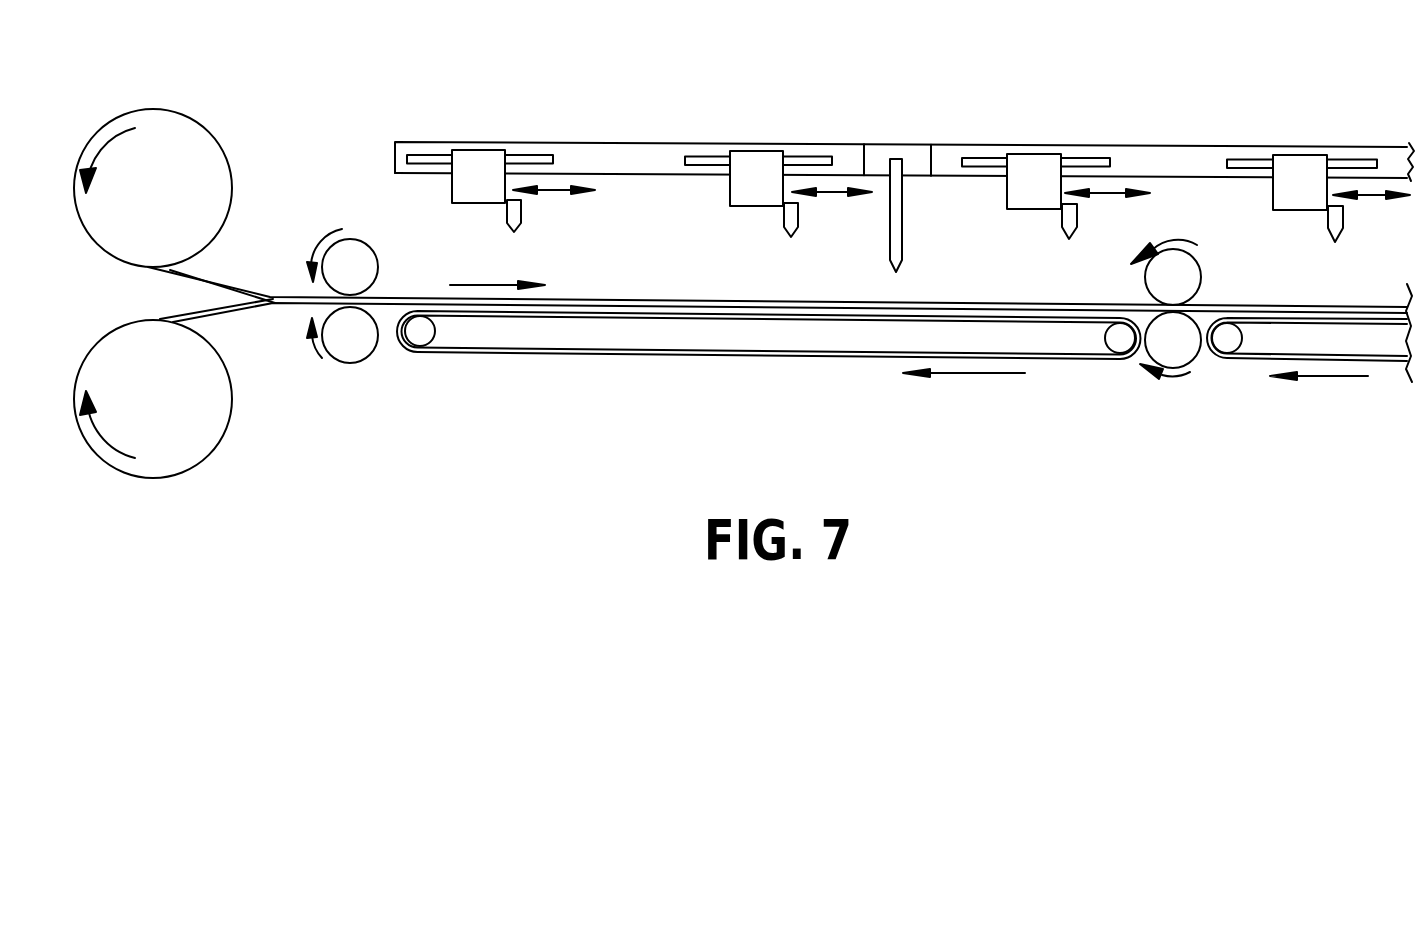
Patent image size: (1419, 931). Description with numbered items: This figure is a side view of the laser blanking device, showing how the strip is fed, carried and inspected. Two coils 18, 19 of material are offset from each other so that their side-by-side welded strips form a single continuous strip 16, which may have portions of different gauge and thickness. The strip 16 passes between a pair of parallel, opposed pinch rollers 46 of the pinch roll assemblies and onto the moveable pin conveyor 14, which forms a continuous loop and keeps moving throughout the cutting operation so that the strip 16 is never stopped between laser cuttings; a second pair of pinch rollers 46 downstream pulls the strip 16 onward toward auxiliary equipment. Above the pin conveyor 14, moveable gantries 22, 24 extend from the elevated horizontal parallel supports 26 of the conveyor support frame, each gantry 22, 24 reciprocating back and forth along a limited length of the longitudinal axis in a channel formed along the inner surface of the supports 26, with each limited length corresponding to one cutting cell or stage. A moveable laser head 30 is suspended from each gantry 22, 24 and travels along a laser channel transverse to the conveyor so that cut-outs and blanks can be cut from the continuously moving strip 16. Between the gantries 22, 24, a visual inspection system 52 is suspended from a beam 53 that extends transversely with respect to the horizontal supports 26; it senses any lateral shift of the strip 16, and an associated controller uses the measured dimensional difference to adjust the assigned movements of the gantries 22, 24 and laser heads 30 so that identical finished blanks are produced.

The coil 19 is at (177, 125).
The coil stock 18 is at (178, 467).
The continuous strip 16 is at (629, 300).
The moveable pin conveyor 14 is at (582, 354).
The pinch rollers 46 is at (370, 263).
The horizontal parallel supports 26 is at (625, 148).
The moveable gantry 22 is at (478, 167).
The moveable gantry 24 is at (1300, 173).
The moveable laser head 30 is at (516, 228).
The beam 53 is at (879, 155).
The visual inspection system 52 is at (898, 208).